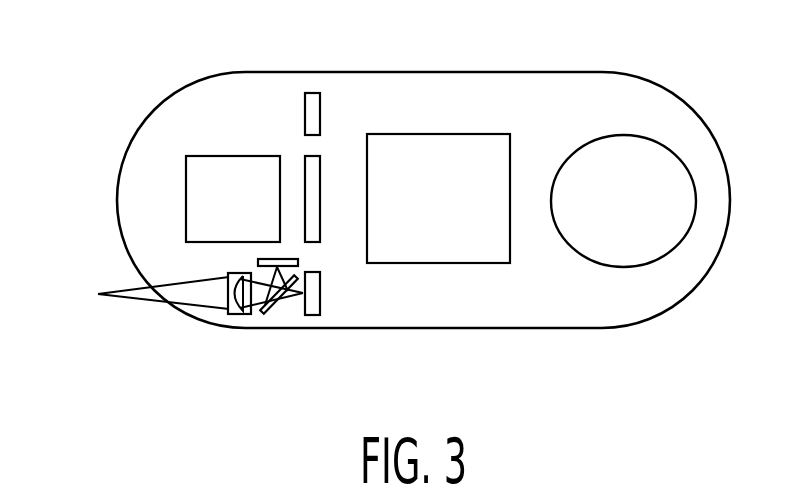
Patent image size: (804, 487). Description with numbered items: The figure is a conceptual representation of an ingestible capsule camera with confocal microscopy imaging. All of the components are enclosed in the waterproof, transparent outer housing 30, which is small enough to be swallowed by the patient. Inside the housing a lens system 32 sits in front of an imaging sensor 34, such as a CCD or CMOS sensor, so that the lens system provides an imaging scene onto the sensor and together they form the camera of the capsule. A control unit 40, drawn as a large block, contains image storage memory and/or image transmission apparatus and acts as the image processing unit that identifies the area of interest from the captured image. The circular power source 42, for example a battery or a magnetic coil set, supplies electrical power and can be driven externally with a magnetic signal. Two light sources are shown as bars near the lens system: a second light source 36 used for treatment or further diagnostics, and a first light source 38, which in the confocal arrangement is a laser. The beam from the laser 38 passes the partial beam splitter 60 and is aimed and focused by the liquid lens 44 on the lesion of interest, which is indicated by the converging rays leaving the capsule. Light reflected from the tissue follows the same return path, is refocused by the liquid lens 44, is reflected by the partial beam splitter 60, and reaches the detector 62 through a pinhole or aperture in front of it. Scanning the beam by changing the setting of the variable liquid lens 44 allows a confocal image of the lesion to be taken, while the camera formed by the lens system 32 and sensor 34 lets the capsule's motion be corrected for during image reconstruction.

The outer housing 30 is at (548, 328).
The lens system 32 is at (186, 193).
The imaging sensor 34 is at (320, 168).
The second light source 36 is at (305, 112).
The first light source 38 is at (310, 315).
The control unit 40 is at (450, 263).
The power source 42 is at (632, 266).
The liquid lens 44 is at (230, 314).
The partial beam splitter 60 is at (262, 312).
The detector 62 is at (258, 262).